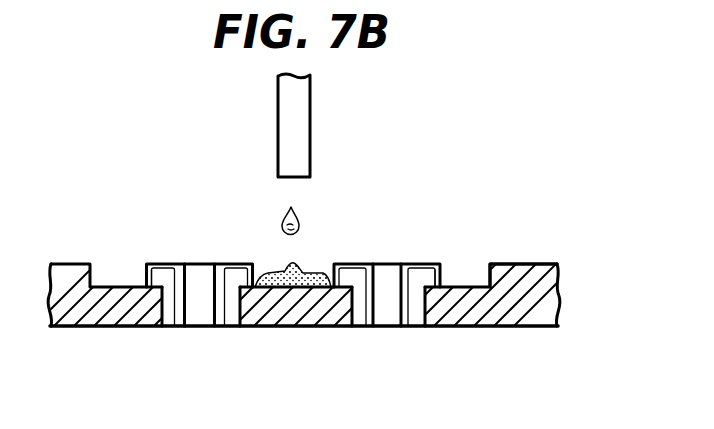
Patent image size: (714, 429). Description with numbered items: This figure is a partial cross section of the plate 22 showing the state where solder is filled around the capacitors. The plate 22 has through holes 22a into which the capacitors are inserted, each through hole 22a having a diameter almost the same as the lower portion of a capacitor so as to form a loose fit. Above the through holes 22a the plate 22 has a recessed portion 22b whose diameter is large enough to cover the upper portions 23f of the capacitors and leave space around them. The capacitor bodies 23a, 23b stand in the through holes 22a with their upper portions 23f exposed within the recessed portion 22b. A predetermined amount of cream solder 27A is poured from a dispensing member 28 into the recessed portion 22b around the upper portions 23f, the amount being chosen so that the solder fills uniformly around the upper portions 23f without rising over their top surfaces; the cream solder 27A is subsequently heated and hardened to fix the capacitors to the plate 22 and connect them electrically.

The plate 22 is at (533, 265).
The through hole 22a is at (173, 327).
The recessed portion 22b is at (488, 286).
The resist pattern (left) 23a is at (185, 264).
The resist pattern (right) 23b is at (413, 264).
The upper portion of capacitor 23f is at (145, 264).
The cream solder 27A is at (300, 217).
The dispensing nozzle 28 is at (310, 116).